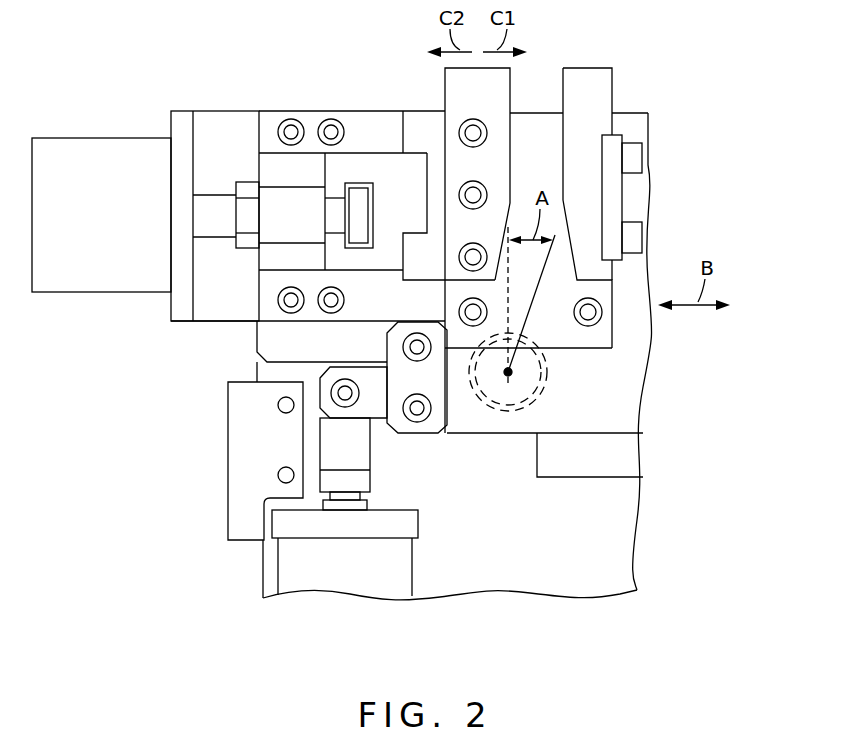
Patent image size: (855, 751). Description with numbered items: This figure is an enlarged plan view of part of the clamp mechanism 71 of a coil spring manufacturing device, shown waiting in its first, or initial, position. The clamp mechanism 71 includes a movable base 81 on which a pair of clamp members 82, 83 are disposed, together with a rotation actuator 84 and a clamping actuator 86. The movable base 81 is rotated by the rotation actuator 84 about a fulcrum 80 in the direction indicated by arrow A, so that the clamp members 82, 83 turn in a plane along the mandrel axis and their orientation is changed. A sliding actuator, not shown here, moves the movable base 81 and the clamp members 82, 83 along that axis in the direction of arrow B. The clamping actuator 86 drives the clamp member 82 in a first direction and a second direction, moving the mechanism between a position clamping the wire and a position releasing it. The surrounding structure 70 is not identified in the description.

The clamp mechanism 71 is at (662, 63).
The clamping actuator 86 is at (101, 140).
The clamp member 82 is at (460, 160).
The clamp member 83 is at (595, 193).
The movable base 81 is at (632, 382).
The fulcrum 80 is at (508, 380).
The frame 70 is at (615, 555).
The rotation actuator 84 is at (352, 580).